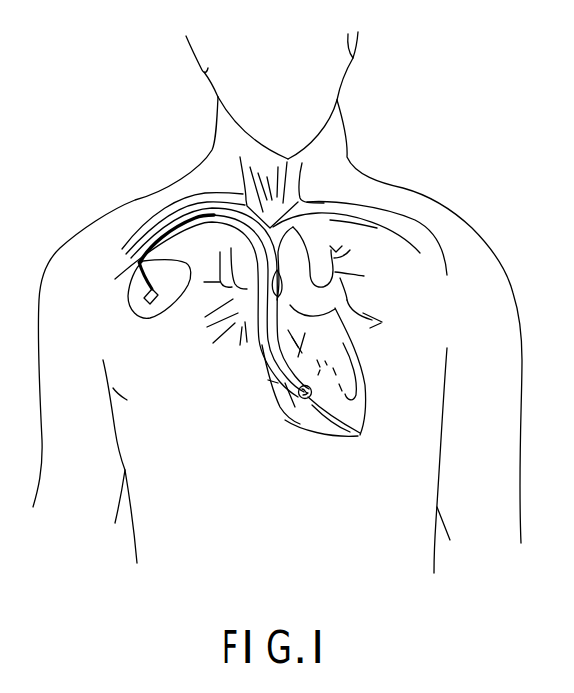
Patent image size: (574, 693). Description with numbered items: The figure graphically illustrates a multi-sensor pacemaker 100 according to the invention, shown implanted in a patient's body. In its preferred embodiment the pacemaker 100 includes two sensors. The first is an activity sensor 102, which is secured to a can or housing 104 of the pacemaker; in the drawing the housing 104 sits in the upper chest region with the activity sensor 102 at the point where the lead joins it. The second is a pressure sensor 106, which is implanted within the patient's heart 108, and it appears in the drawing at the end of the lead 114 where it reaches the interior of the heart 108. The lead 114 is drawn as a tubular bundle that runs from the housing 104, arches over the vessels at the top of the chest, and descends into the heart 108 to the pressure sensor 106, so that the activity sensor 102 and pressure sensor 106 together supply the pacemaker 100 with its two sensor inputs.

The multi-sensor pacemaker 100 is at (110, 306).
The activity sensor 102 is at (150, 292).
The can or housing 104 is at (148, 318).
The pressure sensor 106 is at (308, 398).
The heart 108 is at (288, 420).
The pacing lead 114 is at (183, 215).